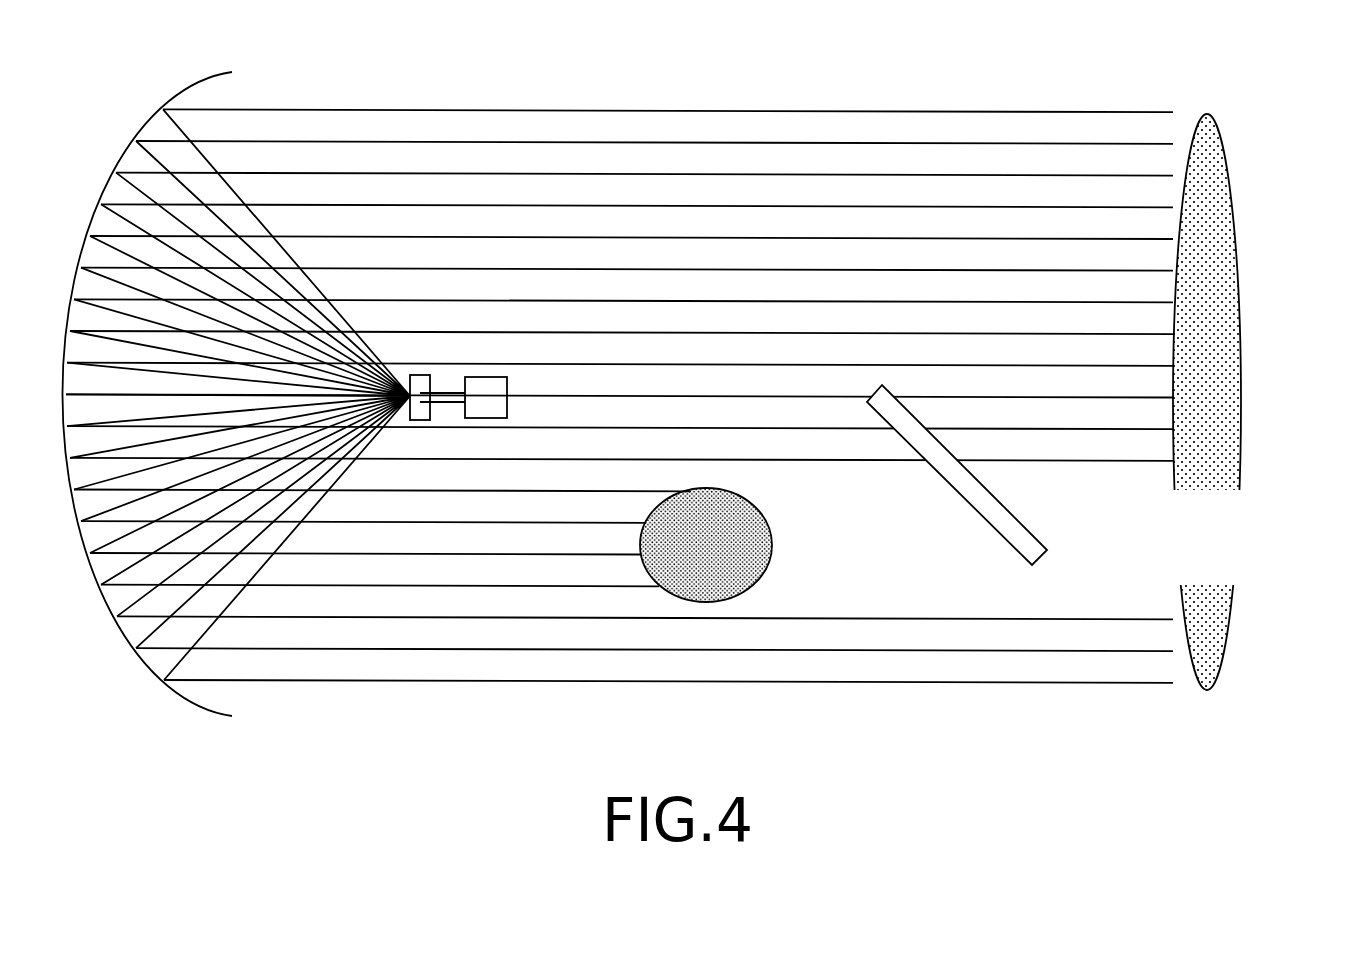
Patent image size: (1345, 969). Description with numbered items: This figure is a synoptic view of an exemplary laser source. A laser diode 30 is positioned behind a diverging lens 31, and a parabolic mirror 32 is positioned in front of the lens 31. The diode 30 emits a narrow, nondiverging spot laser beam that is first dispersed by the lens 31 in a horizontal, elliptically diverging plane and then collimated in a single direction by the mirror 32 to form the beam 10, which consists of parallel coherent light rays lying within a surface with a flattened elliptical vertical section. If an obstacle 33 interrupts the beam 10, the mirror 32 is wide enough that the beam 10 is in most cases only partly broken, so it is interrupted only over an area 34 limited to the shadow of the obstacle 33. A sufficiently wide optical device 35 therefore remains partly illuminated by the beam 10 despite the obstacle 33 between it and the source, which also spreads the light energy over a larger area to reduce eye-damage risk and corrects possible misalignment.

The laser beam 10 is at (1225, 275).
The laser diode 30 is at (493, 385).
The diverging lens 31 is at (430, 377).
The parabolic mirror 32 is at (188, 83).
The obstacle 33 is at (733, 532).
The area 34 is at (1257, 482).
The optical device 35 is at (980, 513).